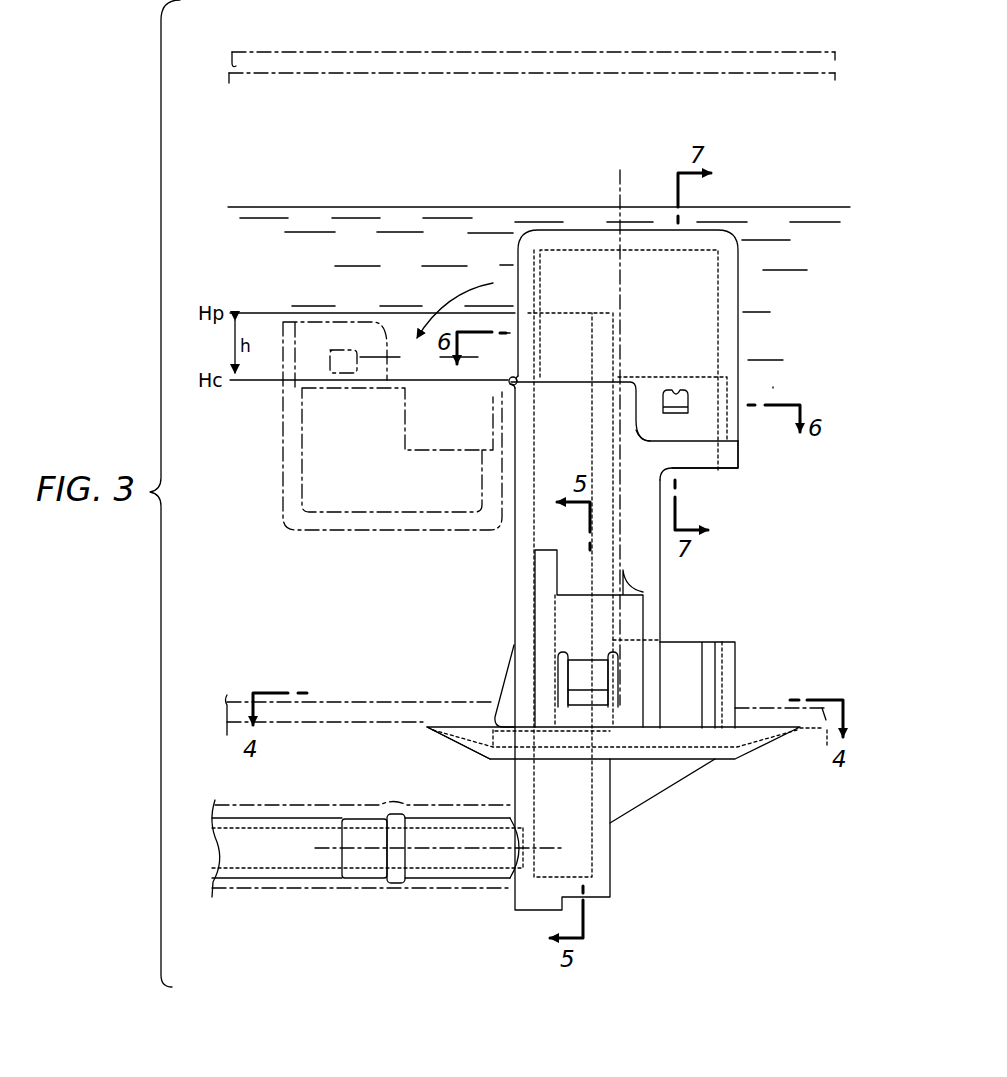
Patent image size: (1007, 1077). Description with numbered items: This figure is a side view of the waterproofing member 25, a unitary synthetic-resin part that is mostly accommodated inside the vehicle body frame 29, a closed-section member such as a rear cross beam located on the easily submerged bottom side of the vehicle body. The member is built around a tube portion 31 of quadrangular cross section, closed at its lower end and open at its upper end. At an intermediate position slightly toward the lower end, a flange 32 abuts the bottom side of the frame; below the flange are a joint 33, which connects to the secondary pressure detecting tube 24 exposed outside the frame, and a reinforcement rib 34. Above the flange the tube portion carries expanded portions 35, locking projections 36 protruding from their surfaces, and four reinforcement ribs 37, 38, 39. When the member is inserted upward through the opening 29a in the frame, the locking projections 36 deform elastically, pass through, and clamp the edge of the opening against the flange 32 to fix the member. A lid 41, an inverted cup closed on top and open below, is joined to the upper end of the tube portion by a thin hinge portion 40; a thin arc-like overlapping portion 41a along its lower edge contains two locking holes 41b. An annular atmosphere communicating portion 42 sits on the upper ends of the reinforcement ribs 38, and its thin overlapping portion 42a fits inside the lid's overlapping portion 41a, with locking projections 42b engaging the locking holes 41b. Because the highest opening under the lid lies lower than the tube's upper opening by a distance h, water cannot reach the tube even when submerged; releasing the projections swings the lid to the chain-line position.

The secondary pressure detecting tube 24 is at (272, 887).
The waterproofing member 25 is at (775, 386).
The vehicle body frame 29 is at (349, 696).
The opening 29a is at (487, 757).
The tube portion 31 is at (515, 544).
The flange 32 is at (753, 752).
The joint 33 is at (437, 867).
The reinforcement rib 34 is at (647, 790).
The expanded portion 35 is at (570, 625).
The locking projection 36 is at (583, 697).
The reinforcement rib 37 is at (507, 688).
The reinforcement rib 38 is at (653, 632).
The reinforcement rib 39 is at (733, 655).
The hinge portion 40 is at (509, 386).
The lid 41 is at (582, 228).
The overlapping portion 41a is at (737, 428).
The locking hole 41b is at (680, 392).
The atmosphere communicating portion 42 is at (691, 472).
The overlapping portion 42a is at (740, 397).
The locking projection 42b is at (675, 412).